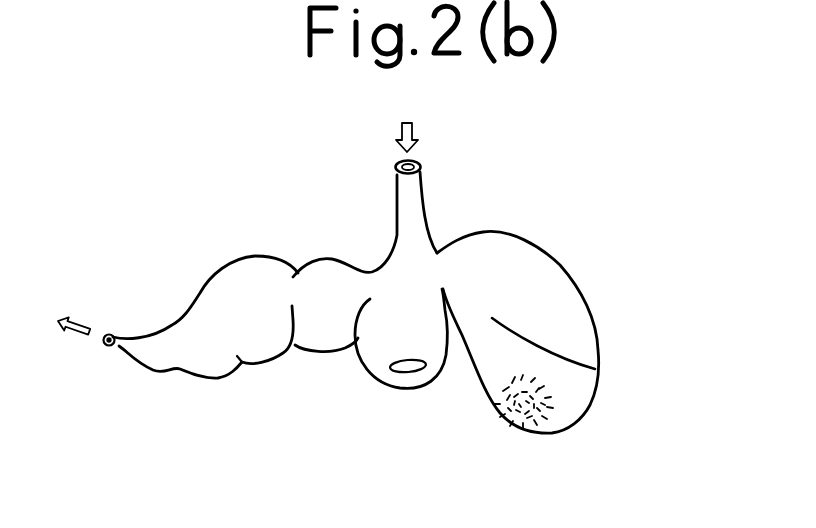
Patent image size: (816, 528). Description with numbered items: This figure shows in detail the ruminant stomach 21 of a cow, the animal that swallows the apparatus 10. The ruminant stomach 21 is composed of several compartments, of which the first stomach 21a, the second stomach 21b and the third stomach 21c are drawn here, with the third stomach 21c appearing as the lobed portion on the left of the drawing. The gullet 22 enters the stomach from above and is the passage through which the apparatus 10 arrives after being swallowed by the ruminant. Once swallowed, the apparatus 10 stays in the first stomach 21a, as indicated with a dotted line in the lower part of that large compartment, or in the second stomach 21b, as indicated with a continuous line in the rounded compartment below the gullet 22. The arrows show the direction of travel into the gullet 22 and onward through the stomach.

The ruminant stomach 21 is at (564, 215).
The first stomach 21a is at (583, 295).
The second stomach 21b is at (408, 387).
The third stomach 21c is at (231, 265).
The gullet 22 is at (415, 201).
The apparatus 10 is at (430, 400).